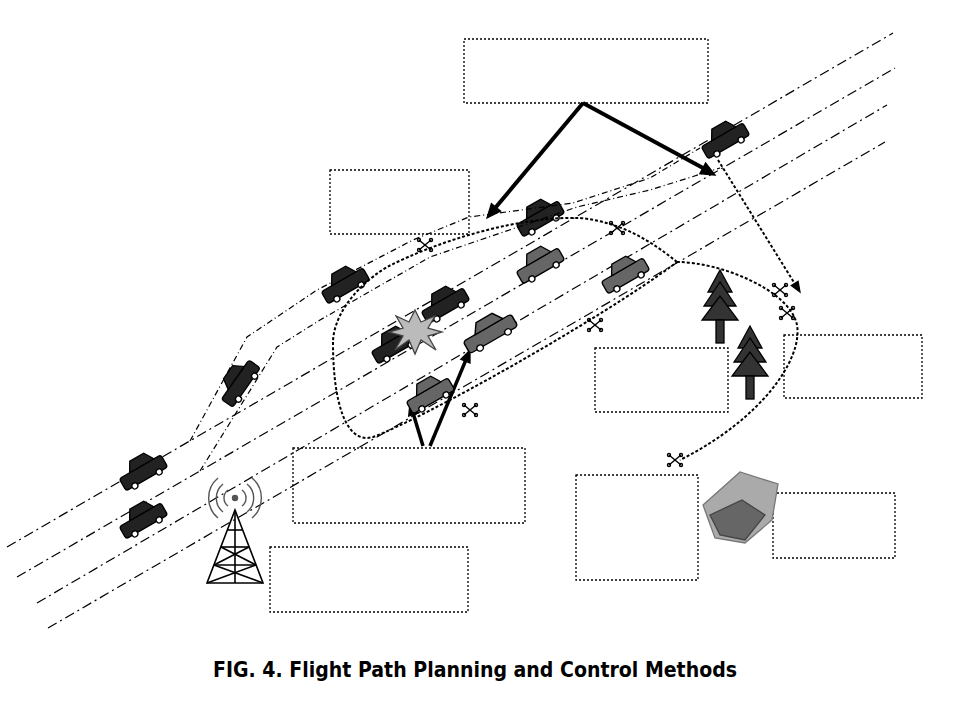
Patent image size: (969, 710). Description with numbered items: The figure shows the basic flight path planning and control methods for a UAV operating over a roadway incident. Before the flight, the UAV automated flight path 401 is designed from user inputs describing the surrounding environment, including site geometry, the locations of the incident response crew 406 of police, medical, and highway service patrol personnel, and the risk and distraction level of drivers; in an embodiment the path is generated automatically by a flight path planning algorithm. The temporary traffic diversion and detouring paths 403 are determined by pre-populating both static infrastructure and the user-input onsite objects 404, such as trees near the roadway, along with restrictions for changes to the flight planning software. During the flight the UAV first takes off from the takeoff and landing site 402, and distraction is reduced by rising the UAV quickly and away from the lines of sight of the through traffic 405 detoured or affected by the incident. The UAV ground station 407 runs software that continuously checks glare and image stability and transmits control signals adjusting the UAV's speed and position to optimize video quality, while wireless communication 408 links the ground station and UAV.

The UAV automated flight path 401 is at (627, 310).
The UAV takeoff and landing site 402 is at (616, 517).
The temporary traffic diversion and detouring paths 403 is at (455, 304).
The objects onsite 404 is at (681, 341).
The through traffic 405 is at (607, 124).
The incident response crew 406 is at (409, 414).
The UAV ground station 407 is at (799, 524).
The Wireless Communication 408 is at (360, 545).